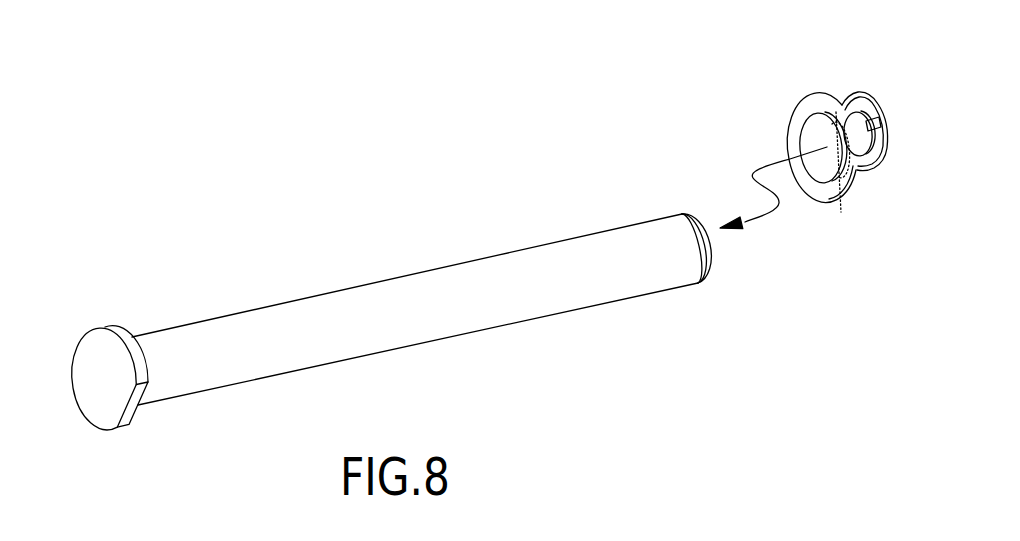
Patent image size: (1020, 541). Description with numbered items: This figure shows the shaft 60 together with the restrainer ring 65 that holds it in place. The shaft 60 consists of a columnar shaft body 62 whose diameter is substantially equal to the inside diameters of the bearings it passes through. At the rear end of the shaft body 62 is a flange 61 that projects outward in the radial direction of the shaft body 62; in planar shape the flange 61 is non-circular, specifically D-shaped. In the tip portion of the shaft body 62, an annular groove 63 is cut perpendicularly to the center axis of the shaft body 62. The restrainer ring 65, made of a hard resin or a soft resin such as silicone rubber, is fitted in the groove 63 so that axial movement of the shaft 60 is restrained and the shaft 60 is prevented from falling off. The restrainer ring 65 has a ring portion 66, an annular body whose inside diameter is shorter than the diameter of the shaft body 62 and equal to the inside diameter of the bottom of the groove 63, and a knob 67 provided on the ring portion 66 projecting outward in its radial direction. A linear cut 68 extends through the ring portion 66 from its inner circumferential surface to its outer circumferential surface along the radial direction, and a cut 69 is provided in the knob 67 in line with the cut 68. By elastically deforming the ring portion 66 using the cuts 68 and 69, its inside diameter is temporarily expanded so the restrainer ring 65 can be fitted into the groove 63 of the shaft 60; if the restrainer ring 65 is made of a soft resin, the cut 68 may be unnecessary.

The shaft 60 is at (316, 173).
The flange 61 is at (82, 337).
The shaft body 62 is at (322, 297).
The groove 63 is at (678, 213).
The restrainer ring 65 is at (822, 73).
The ring portion 66 is at (791, 124).
The knob 67 is at (882, 159).
The linear cut 68 is at (838, 181).
The cut 69 is at (880, 124).